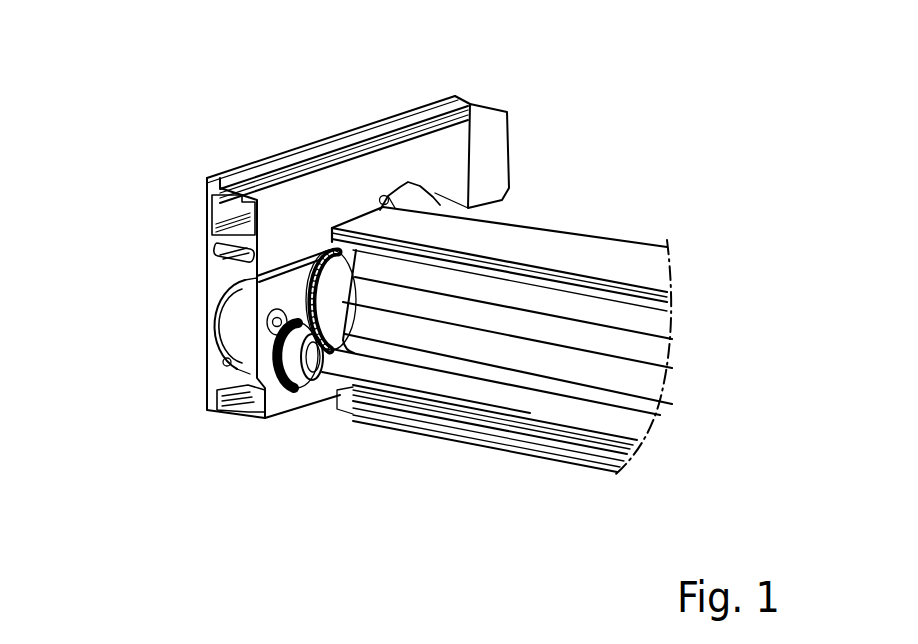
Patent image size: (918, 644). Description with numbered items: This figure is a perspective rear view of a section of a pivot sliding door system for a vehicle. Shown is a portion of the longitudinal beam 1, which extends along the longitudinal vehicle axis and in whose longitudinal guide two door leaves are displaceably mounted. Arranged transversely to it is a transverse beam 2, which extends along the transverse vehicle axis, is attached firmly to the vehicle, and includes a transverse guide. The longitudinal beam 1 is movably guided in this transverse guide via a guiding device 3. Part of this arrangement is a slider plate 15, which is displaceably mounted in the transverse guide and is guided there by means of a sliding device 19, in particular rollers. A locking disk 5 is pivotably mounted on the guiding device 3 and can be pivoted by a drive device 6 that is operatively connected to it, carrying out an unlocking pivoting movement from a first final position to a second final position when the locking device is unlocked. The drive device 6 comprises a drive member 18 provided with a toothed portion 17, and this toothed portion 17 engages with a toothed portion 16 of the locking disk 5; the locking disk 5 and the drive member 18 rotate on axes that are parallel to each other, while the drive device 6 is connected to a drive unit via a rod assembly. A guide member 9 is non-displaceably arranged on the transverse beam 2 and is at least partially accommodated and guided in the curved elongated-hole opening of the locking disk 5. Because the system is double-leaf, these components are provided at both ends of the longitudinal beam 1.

The longitudinal beam 1 is at (568, 345).
The transverse beam 2 is at (487, 167).
The guiding device 3 is at (256, 332).
The locking disk 5 is at (328, 255).
The drive device 6 is at (390, 375).
The guide member 9 is at (385, 197).
The slider plate 15 is at (257, 274).
The toothed portion 16 is at (298, 262).
The toothed portion 17 is at (280, 385).
The drive member 18 is at (297, 393).
The sliding device 19 is at (222, 321).